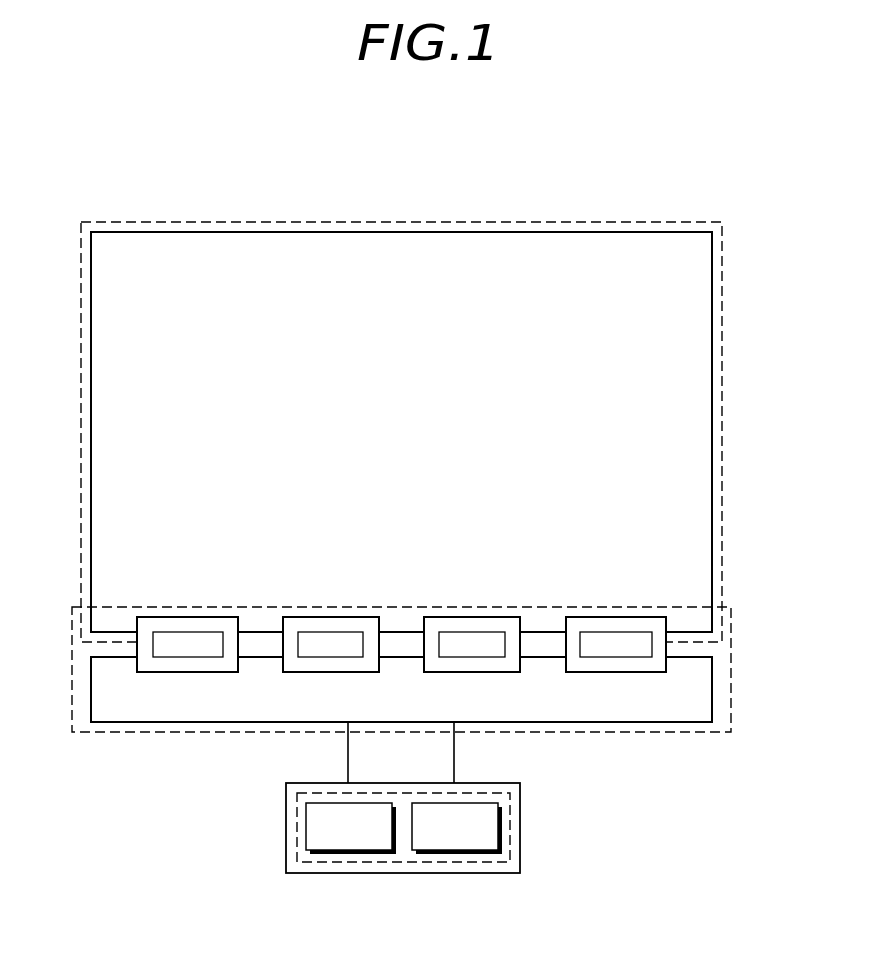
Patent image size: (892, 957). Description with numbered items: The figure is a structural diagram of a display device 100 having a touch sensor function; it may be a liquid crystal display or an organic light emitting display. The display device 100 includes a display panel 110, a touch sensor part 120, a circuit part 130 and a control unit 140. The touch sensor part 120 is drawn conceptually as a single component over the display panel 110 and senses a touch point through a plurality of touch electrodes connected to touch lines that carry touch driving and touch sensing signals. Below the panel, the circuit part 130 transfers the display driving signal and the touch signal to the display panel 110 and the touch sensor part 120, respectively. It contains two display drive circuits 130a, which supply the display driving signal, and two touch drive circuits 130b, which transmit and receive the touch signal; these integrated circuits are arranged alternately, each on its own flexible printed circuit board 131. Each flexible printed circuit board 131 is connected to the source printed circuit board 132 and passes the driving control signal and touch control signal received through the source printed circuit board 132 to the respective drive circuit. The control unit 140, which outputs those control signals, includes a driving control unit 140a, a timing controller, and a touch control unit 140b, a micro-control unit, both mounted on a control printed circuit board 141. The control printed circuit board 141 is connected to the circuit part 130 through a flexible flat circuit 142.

The display device 100 is at (645, 188).
The display panel 110 is at (712, 408).
The touch sensor part 120 is at (722, 330).
The circuit part 130 is at (731, 640).
The display drive circuit 130a is at (196, 658).
The touch drive circuit 130b is at (332, 657).
The flexible printed circuit board 131 is at (163, 672).
The source printed circuit board 132 is at (712, 688).
The control unit 140 is at (510, 827).
The driving control unit 140a is at (348, 850).
The touch control unit 140b is at (455, 850).
The control printed circuit board 141 is at (520, 852).
The flexible flat circuit 142 is at (454, 775).